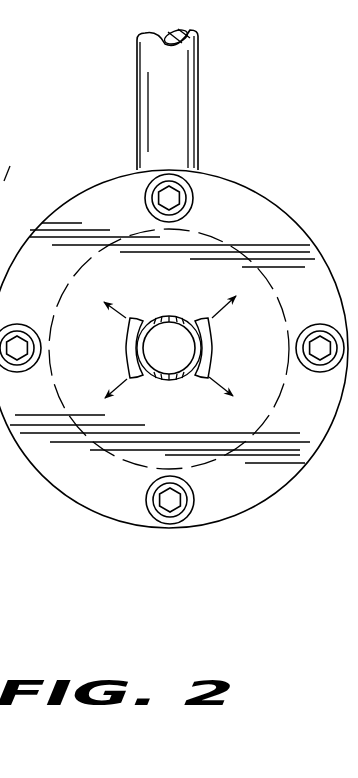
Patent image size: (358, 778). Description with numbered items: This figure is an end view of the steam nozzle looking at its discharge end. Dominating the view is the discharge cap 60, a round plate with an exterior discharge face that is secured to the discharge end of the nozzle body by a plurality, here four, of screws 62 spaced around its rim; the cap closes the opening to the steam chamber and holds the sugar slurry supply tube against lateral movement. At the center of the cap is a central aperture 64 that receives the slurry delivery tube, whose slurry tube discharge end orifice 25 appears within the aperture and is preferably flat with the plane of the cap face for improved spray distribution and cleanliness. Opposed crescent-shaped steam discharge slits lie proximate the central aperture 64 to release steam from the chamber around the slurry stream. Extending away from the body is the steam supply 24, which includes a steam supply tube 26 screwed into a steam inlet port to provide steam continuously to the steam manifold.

The steam supply 24 is at (204, 73).
The steam supply tube 26 is at (202, 127).
The screws 62 is at (193, 200).
The discharge cap 60 is at (277, 243).
The slurry tube discharge end orifice 25 is at (175, 317).
The central aperture 64 is at (172, 382).